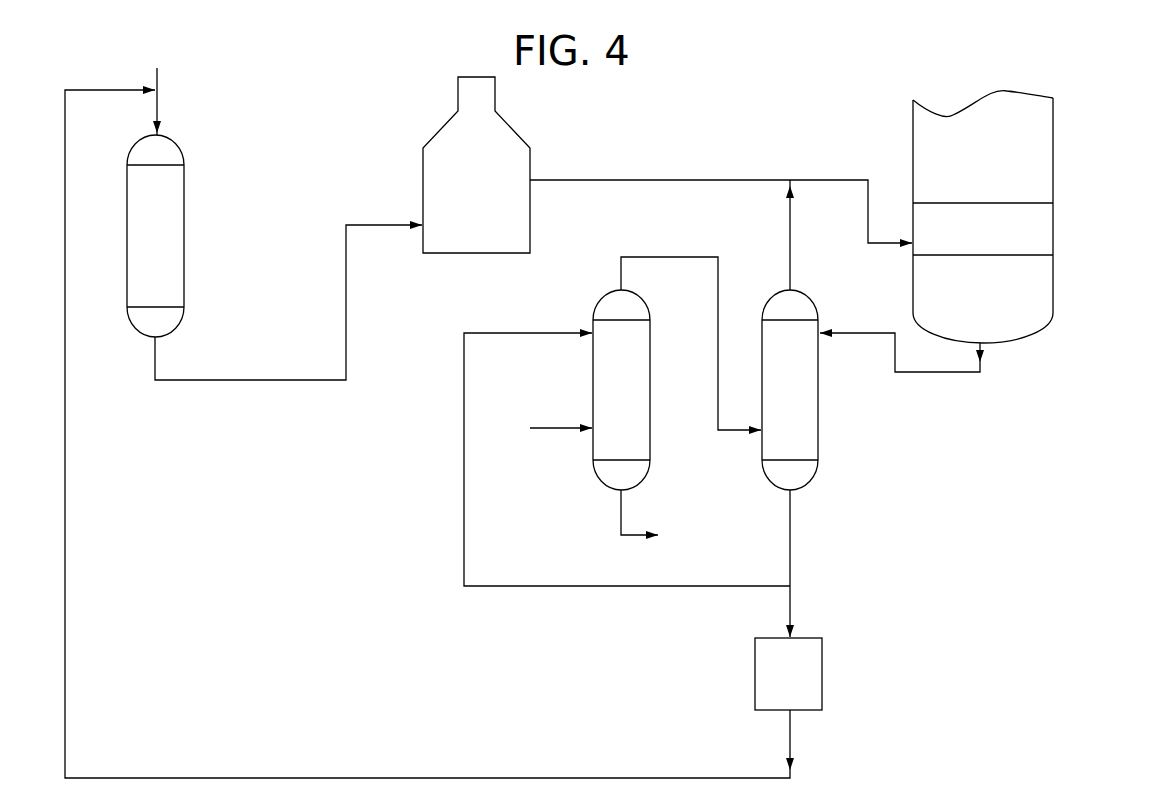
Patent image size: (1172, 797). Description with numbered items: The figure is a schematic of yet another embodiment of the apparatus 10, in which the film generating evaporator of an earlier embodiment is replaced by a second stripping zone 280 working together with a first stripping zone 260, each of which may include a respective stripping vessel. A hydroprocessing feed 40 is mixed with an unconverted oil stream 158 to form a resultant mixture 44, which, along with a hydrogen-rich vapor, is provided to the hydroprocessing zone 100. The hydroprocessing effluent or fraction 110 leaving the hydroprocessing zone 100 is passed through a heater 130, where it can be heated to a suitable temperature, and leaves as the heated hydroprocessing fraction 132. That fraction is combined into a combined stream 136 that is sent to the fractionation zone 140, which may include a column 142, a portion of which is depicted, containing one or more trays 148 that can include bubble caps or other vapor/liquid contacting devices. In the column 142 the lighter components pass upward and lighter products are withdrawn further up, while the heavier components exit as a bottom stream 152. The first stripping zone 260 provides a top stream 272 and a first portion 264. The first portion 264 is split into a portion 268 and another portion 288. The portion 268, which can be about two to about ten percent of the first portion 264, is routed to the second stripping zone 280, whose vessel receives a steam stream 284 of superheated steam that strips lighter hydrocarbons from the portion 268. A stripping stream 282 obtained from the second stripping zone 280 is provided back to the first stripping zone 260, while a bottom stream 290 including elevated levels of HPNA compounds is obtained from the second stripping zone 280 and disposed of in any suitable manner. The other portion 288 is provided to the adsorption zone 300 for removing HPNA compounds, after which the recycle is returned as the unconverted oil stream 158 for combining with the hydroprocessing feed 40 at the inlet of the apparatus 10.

The apparatus 10 is at (106, 58).
The hydroprocessing feed 40 is at (158, 80).
The resultant mixture 44 is at (158, 100).
The hydroprocessing zone 100 is at (190, 200).
The hydroprocessing effluent or fraction 110 is at (245, 383).
The heater 130 is at (445, 127).
The heated hydroprocessing fraction 132 is at (632, 180).
The combined stream 136 is at (820, 180).
The fractionation zone 140 is at (1053, 138).
The column 142 is at (1002, 152).
The trays 148 is at (1038, 200).
The bottom stream 152 is at (985, 345).
The first stripping zone 260 is at (820, 410).
The first portion 264 is at (793, 530).
The portion 268 is at (585, 590).
The top stream 272 is at (792, 248).
The second stripping zone 280 is at (597, 307).
The stripping stream 282 is at (640, 257).
The steam stream 284 is at (557, 428).
The another portion 288 is at (785, 603).
The bottom stream 290 is at (627, 540).
The adsorption zone 300 is at (808, 635).
The unconverted oil stream 158 is at (795, 732).